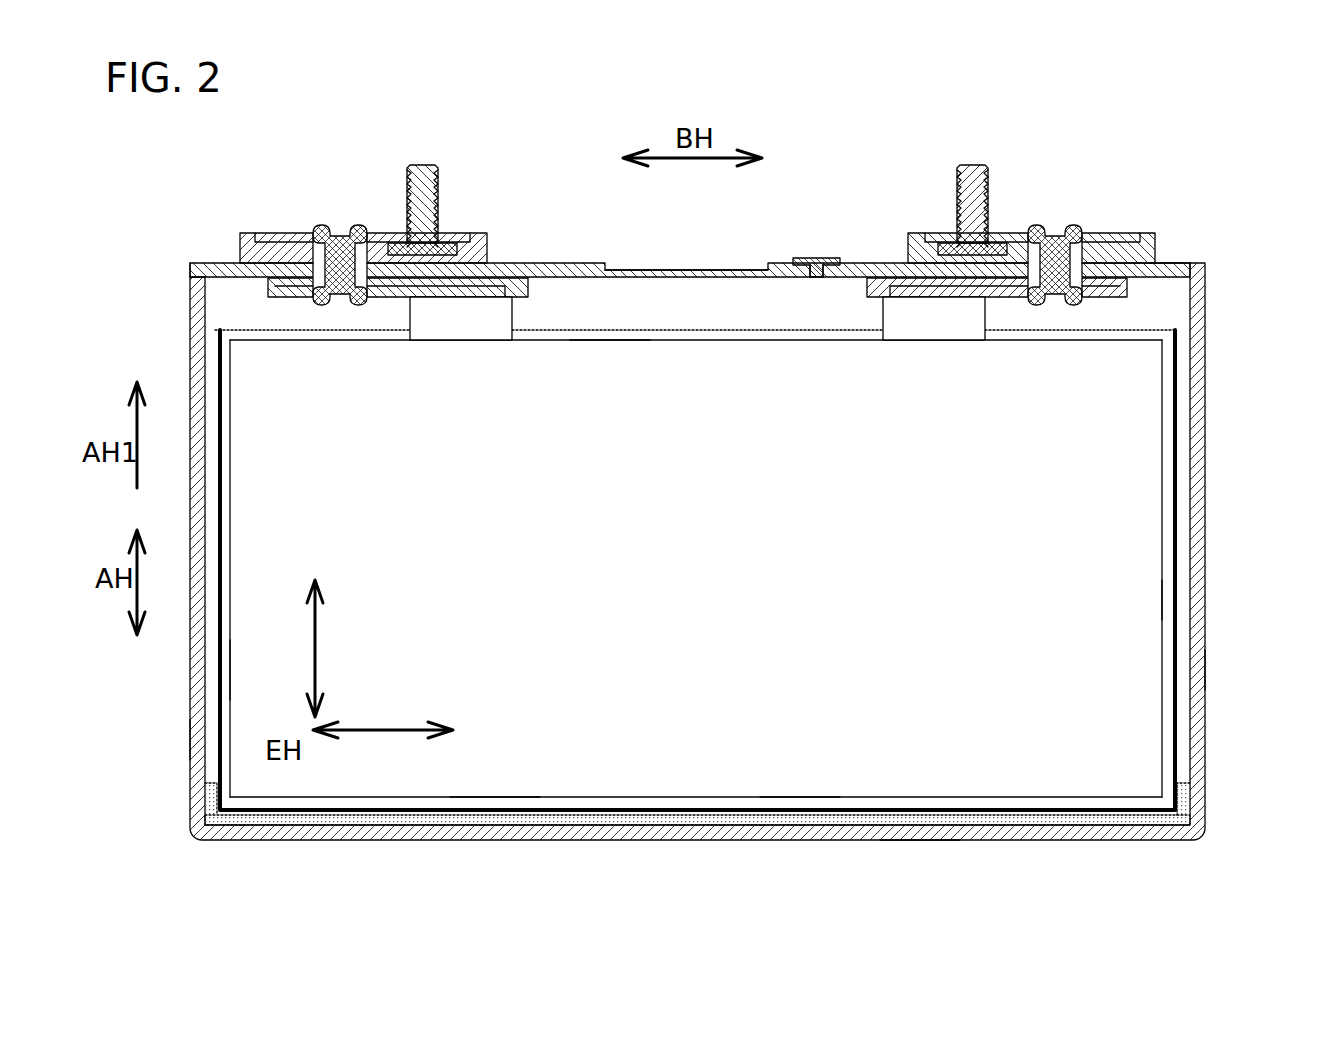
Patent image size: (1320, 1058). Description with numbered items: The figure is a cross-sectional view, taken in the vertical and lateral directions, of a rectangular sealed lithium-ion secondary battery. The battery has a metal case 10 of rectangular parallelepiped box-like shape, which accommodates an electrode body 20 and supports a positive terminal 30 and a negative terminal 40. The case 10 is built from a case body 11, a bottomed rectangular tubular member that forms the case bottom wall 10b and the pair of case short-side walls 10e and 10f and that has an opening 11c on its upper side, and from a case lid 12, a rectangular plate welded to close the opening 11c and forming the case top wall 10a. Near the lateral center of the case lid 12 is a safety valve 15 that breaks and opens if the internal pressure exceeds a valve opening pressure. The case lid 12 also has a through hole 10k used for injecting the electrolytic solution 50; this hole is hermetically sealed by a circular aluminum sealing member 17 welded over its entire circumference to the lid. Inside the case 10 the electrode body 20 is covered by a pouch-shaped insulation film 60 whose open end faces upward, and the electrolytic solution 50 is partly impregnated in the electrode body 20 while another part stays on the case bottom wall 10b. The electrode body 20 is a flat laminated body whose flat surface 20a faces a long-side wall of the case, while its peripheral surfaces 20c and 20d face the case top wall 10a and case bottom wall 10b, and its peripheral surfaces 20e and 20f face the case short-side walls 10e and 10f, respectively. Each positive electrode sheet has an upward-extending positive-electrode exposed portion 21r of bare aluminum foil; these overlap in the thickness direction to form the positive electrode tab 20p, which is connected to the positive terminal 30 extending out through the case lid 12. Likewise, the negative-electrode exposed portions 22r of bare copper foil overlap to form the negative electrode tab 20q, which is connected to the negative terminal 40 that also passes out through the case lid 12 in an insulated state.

The case 10 is at (716, 534).
The case top wall 10a is at (1165, 262).
The case bottom wall 10b is at (922, 840).
The case short-side wall 10e is at (198, 738).
The case short-side wall 10f is at (1200, 670).
The through hole 10k is at (818, 270).
The case body 11 is at (1205, 542).
The opening 11c is at (198, 263).
The case lid 12 is at (1175, 265).
The safety valve 15 is at (676, 270).
The sealing member 17 is at (800, 258).
The electrode body 20 is at (702, 542).
The electrode-body flat surface 20a is at (494, 720).
The electrode-body peripheral surface 20c is at (612, 340).
The electrode-body peripheral surface 20d is at (800, 800).
The electrode-body peripheral surface 20e is at (228, 668).
The electrode-body peripheral surface 20f is at (1165, 598).
The positive electrode tab 20p is at (487, 249).
The negative electrode tab 20q is at (860, 315).
The positive-electrode exposed portion 21r is at (496, 310).
The negative-electrode exposed portion 22r is at (892, 313).
The positive terminal 30 is at (415, 167).
The negative terminal 40 is at (985, 178).
The electrolytic solution 50 is at (351, 824).
The insulation film 60 is at (1130, 330).